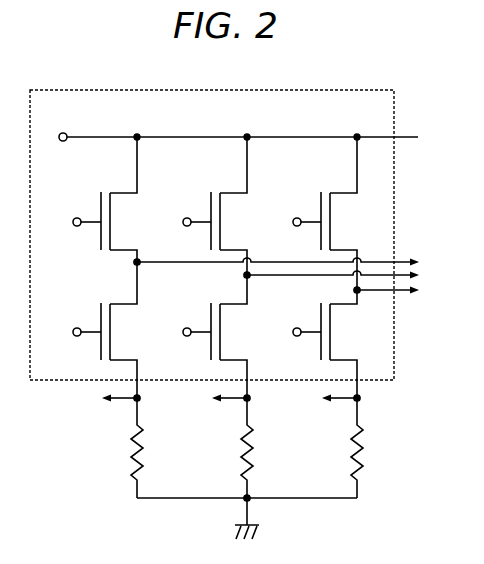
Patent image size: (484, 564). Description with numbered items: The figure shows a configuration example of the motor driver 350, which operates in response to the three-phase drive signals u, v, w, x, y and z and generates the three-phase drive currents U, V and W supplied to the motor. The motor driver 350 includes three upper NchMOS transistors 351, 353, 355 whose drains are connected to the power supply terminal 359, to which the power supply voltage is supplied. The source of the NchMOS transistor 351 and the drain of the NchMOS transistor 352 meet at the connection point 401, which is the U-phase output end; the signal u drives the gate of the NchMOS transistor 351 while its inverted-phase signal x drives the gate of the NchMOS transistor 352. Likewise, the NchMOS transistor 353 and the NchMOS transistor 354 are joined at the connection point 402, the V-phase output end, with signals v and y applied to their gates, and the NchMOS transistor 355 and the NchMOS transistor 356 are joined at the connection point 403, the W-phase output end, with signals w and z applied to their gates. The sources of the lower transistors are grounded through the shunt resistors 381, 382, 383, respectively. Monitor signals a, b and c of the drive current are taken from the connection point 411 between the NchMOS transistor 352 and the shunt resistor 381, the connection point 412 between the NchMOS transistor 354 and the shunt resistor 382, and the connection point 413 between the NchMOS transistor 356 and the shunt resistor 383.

The motor driver 350 is at (325, 90).
The NchMOS transistor 351 is at (99, 200).
The NchMOS transistor 352 is at (97, 310).
The NchMOS transistor 353 is at (209, 200).
The NchMOS transistor 354 is at (207, 310).
The NchMOS transistor 355 is at (319, 200).
The NchMOS transistor 356 is at (317, 310).
The power supply terminal 359 is at (66, 142).
The shunt resistor 381 is at (130, 454).
The shunt resistor 382 is at (240, 454).
The shunt resistor 383 is at (352, 454).
The connection point 401 is at (130, 262).
The connection point 402 is at (241, 275).
The connection point 403 is at (351, 290).
The connection point 411 is at (140, 401).
The connection point 412 is at (250, 401).
The connection point 413 is at (364, 403).